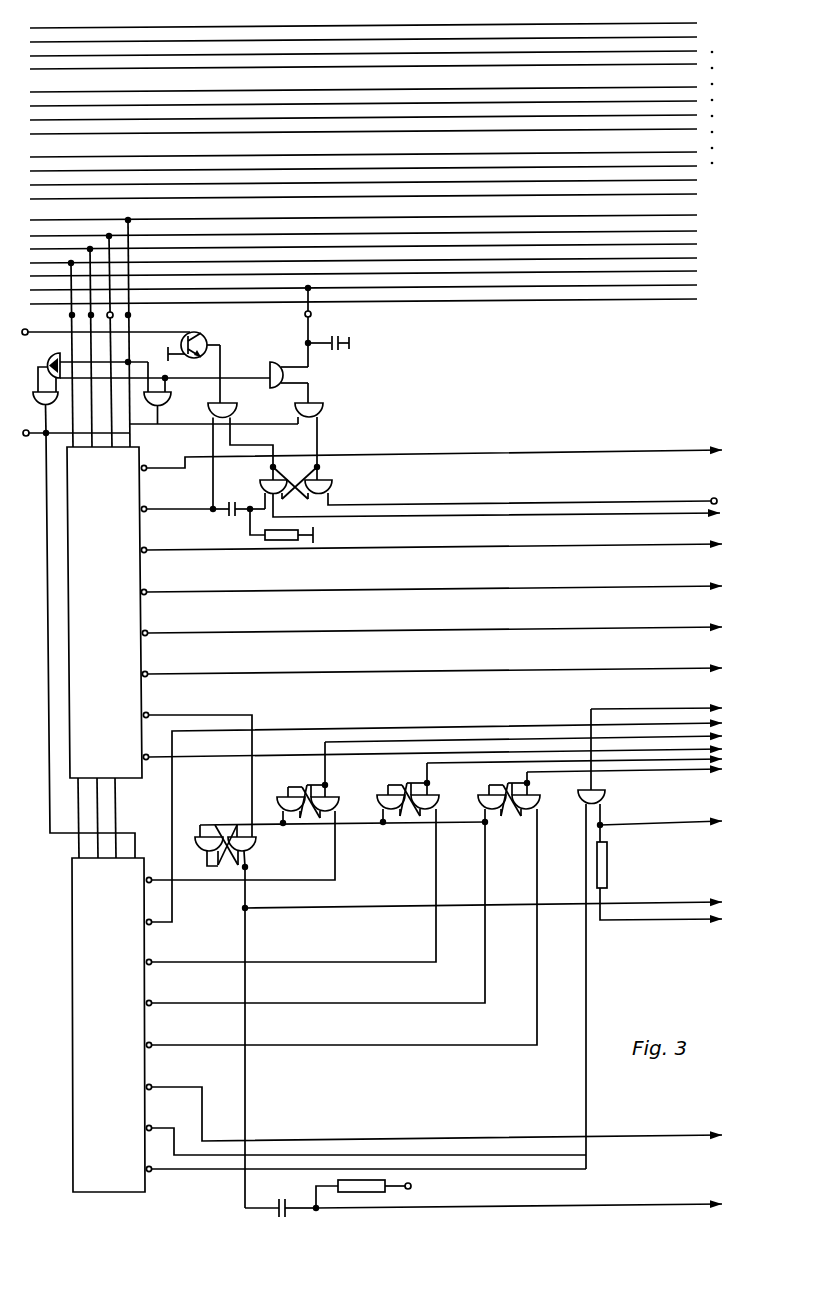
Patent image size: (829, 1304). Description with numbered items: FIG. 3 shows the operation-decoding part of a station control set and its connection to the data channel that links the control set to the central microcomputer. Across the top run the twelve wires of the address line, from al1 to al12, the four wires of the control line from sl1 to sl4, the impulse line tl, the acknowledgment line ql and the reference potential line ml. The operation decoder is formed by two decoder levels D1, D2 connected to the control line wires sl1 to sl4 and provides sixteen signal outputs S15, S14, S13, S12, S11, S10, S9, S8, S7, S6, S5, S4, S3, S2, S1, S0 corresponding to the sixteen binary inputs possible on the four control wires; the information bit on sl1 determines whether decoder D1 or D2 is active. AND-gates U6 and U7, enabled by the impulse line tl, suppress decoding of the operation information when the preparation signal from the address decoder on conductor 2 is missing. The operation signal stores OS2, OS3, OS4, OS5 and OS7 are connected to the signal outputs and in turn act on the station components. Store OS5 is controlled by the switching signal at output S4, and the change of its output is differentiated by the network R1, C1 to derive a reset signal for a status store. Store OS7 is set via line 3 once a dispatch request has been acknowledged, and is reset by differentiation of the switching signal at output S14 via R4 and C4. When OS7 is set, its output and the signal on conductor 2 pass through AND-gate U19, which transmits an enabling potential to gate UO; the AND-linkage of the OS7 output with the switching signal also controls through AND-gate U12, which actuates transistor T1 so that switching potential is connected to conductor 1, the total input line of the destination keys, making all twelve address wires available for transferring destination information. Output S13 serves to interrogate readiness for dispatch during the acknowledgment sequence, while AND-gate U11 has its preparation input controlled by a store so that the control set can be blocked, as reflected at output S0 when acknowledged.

The address line wire al1 is at (702, 20).
The address line wire al12 is at (701, 195).
The control line wire sl1 is at (703, 212).
The control line wire sl4 is at (703, 252).
The reference potential line ml is at (703, 267).
The impulse line tl is at (698, 285).
The acknowledgment line ql is at (698, 299).
The conductor 1 is at (27, 328).
The conductor 2 is at (27, 437).
The line 3 is at (715, 497).
The transistor T1 is at (198, 334).
The AND-gate U7 is at (38, 386).
The AND-gate U6 is at (172, 397).
The gate UO is at (271, 365).
The AND-gate U12 is at (236, 406).
The AND-gate U19 is at (323, 406).
The operation signal store OS7 is at (311, 478).
The capacitor C4 is at (232, 506).
The resistor R4 is at (283, 540).
The decoder level D1 is at (104, 612).
The decoder level D2 is at (108, 1025).
The signal output S15 is at (431, 457).
The signal output S14 is at (177, 498).
The signal output S13 is at (431, 539).
The signal output S12 is at (431, 581).
The signal output S11 is at (432, 622).
The signal output S10 is at (432, 663).
The signal output S9 is at (197, 763).
The signal output S8 is at (414, 749).
The signal output S7 is at (224, 847).
The signal output S6 is at (417, 824).
The signal output S5 is at (291, 887).
The signal output S4 is at (315, 914).
The signal output S3 is at (341, 928).
The signal output S2 is at (434, 1101).
The signal output S1 is at (366, 1129).
The signal output S0 is at (346, 1161).
The operation signal store OS5 is at (219, 830).
The operation signal store OS4 is at (309, 796).
The operation signal store OS3 is at (410, 794).
The operation signal store OS2 is at (488, 790).
The AND-gate U11 is at (604, 802).
The capacitor C1 is at (279, 1204).
The resistor R1 is at (370, 1192).